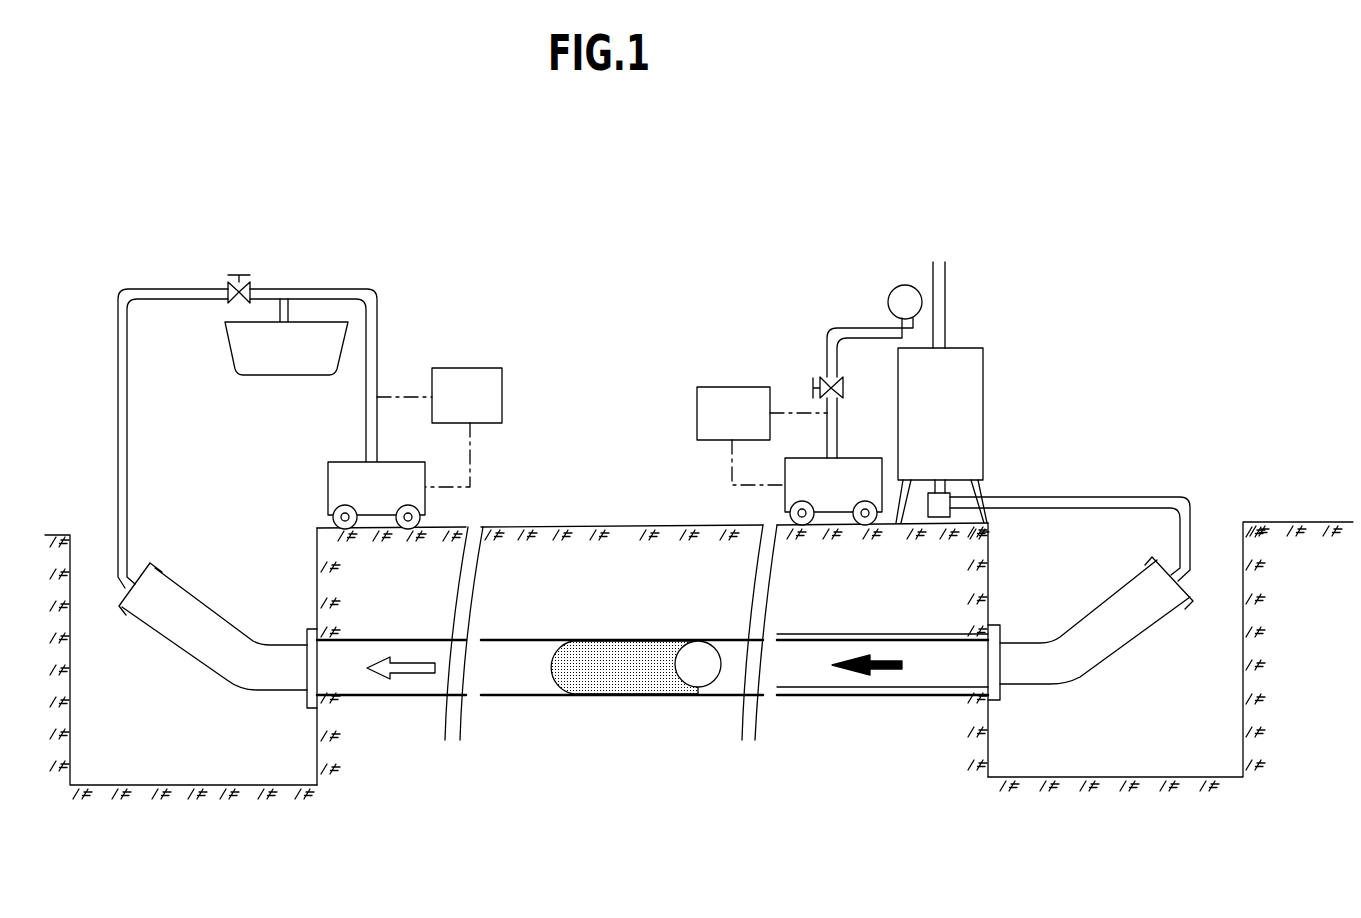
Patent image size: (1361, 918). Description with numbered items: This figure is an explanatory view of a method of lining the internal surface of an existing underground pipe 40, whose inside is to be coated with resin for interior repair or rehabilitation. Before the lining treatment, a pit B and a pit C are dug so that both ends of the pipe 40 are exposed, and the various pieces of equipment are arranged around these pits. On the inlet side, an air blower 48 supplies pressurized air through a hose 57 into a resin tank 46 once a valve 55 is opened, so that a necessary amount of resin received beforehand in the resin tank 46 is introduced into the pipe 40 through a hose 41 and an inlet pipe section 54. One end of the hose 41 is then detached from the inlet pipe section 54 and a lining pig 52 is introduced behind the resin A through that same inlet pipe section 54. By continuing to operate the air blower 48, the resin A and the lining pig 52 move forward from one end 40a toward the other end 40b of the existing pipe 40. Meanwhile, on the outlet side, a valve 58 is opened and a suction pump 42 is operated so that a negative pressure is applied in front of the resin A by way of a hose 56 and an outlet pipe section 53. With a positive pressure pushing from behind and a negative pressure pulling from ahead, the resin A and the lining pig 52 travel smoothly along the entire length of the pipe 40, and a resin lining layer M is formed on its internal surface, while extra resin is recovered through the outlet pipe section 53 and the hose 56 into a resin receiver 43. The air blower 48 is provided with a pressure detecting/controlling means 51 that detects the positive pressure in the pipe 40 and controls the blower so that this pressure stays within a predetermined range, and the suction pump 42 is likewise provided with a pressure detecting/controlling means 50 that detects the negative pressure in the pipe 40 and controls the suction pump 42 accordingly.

The existing underground pipe 40 is at (397, 700).
The one end of the existing pipe 40a is at (988, 660).
The other end of the existing pipe 40b is at (317, 672).
The hose 41 is at (1028, 505).
The suction pump 42 is at (420, 500).
The resin receiver 43 is at (280, 368).
The resin tank 46 is at (970, 348).
The air blower 48 is at (787, 505).
The pressure detecting/controlling means 50 is at (452, 378).
The pressure detecting/controlling means 51 is at (722, 397).
The lining pig 52 is at (700, 665).
The outlet pipe section 53 is at (245, 665).
The inlet pipe section 54 is at (1067, 660).
The valve 55 is at (812, 382).
The hose 56 is at (150, 290).
The hose 57 is at (858, 327).
The valve 58 is at (240, 273).
The resin A is at (585, 673).
The pit B is at (168, 750).
The pit C is at (1133, 738).
The resin lining layer M is at (845, 678).